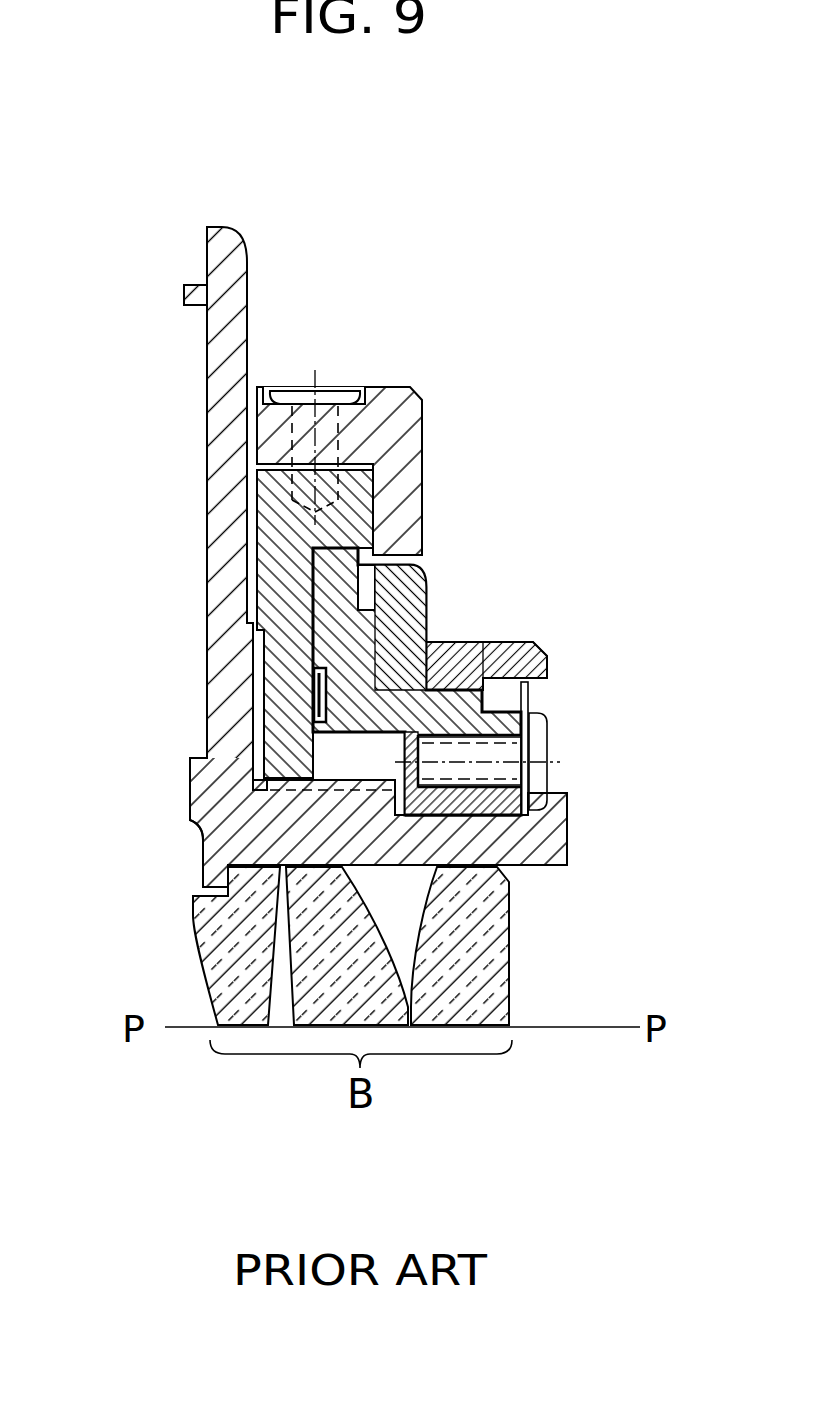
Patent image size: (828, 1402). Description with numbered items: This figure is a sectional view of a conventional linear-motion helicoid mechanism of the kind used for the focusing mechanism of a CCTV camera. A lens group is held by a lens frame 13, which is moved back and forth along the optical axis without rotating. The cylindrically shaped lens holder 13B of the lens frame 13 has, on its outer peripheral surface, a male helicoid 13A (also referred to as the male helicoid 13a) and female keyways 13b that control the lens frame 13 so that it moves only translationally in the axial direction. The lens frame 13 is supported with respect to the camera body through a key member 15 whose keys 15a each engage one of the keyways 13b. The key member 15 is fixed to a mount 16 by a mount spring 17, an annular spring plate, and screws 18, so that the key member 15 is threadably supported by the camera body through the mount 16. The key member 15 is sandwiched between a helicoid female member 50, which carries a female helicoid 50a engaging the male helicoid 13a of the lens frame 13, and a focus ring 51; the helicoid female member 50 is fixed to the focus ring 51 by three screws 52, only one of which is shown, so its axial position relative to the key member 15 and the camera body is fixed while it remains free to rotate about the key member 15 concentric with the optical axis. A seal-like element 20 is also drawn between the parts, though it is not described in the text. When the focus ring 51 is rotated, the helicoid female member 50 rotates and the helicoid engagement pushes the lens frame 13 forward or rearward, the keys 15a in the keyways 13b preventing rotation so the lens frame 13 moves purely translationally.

The lens frame 13 is at (372, 612).
The male helicoid 13A is at (223, 632).
The lens holder 13B is at (385, 845).
The male helicoid 13a is at (497, 652).
The female keyway 13b is at (556, 812).
The key member 15 is at (499, 695).
The key 15a is at (470, 817).
The mount 16 is at (540, 657).
The mount spring 17 is at (523, 697).
The screw 18 is at (545, 748).
The seal member 20 is at (314, 688).
The helicoid female member 50 is at (235, 705).
The female helicoid 50a is at (310, 783).
The focus ring 51 is at (388, 436).
The screw 52 is at (300, 397).